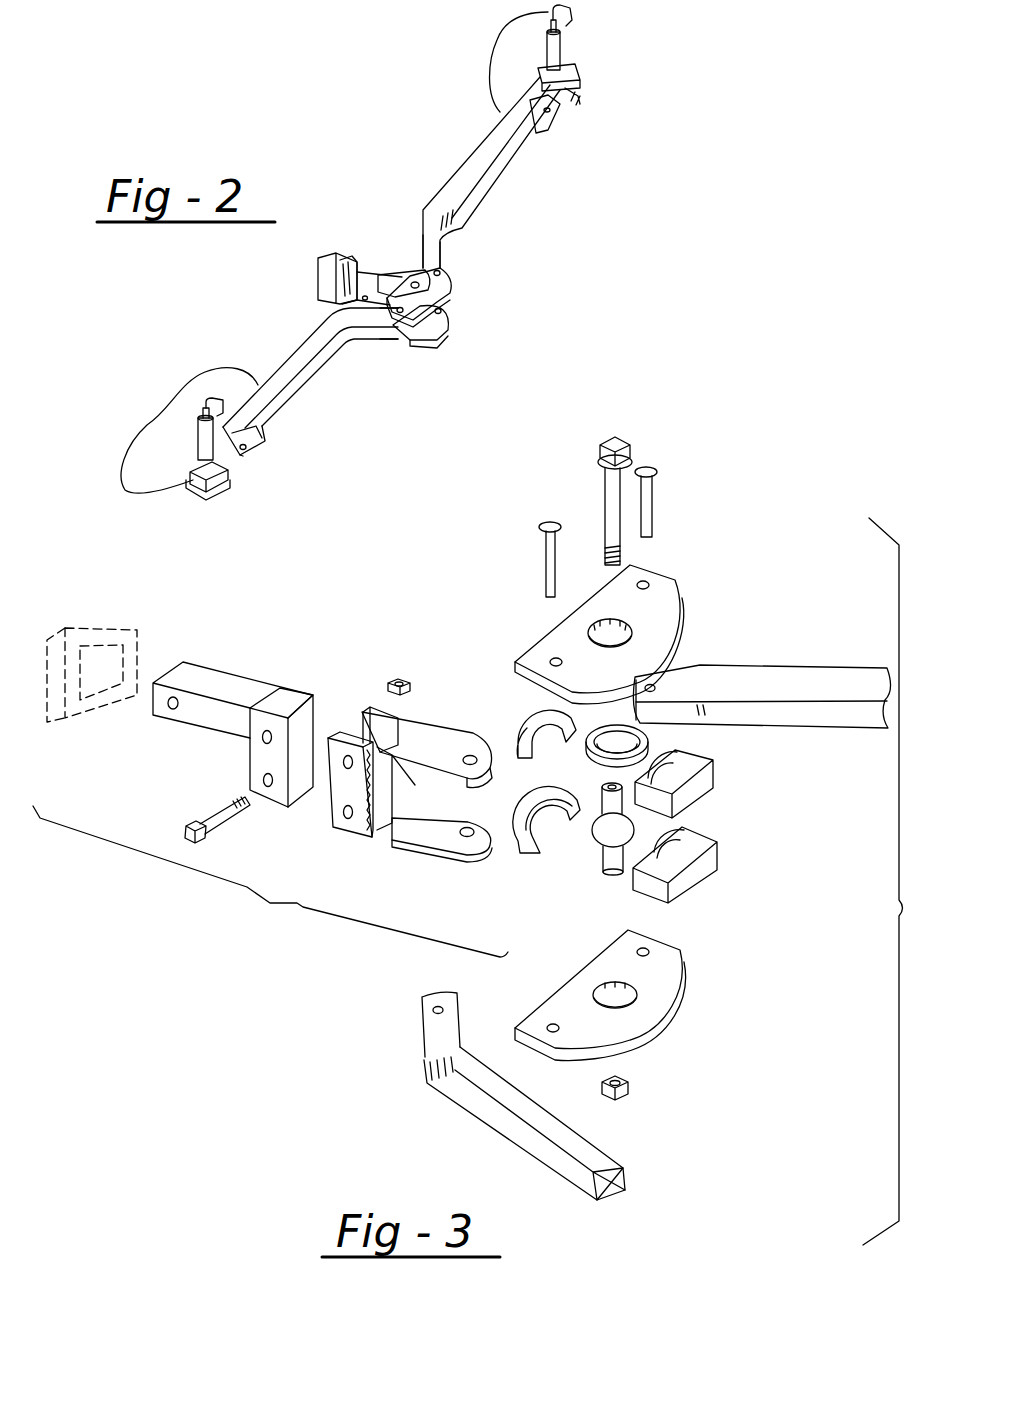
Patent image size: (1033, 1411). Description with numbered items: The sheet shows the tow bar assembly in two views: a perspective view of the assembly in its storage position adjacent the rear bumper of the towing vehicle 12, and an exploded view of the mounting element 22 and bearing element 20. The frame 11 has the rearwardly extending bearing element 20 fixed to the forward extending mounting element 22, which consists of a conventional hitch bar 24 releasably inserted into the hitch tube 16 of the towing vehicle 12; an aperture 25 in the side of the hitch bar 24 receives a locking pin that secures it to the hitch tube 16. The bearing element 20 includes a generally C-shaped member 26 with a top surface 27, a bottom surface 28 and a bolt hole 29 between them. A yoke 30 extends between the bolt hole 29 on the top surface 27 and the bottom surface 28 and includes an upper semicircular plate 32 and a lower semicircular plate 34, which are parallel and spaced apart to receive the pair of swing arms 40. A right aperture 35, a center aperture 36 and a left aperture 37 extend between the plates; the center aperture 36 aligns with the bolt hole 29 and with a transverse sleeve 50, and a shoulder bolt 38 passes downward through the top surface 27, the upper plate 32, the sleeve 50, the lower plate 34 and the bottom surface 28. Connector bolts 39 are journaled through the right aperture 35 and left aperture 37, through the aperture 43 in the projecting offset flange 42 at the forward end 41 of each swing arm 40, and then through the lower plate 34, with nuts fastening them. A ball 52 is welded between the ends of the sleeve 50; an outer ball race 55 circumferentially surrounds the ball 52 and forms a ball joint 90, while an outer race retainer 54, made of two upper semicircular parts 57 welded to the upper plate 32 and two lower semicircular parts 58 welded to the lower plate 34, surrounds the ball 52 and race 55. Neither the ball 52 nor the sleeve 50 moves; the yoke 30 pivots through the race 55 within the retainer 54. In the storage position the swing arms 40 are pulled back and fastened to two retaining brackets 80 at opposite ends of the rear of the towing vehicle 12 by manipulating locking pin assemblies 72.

In FIG. 2, the frame 11 is at (384, 277).
In FIG. 2, the towing vehicle 12 is at (158, 450).
In FIG. 2, the hitch tube 16 is at (340, 258).
In FIG. 3, the hitch tube 16 is at (115, 710).
In FIG. 3, the bearing element 20 is at (416, 773).
In FIG. 3, the mounting element 22 is at (290, 698).
In FIG. 3, the hitch bar 24 is at (218, 665).
In FIG. 3, the aperture 25 is at (177, 707).
In FIG. 3, the C-shaped member 26 is at (400, 797).
In FIG. 3, the top surface 27 is at (437, 730).
In FIG. 3, the bottom surface 28 is at (430, 847).
In FIG. 3, the bolt hole 29 is at (487, 758).
In FIG. 2, the yoke 30 is at (443, 290).
In FIG. 3, the yoke 30 is at (616, 808).
In FIG. 3, the upper semicircular plate 32 is at (618, 610).
In FIG. 3, the lower semicircular plate 34 is at (685, 972).
In FIG. 3, the right aperture 35 is at (556, 660).
In FIG. 3, the center aperture 36 is at (590, 637).
In FIG. 3, the left aperture 37 is at (647, 587).
In FIG. 3, the shoulder bolt 38 is at (603, 510).
In FIG. 3, the connector bolts 39 is at (655, 500).
In FIG. 2, the swing arms 40 is at (507, 157).
In FIG. 3, the swing arms 40 is at (615, 932).
In FIG. 3, the forward end 41 is at (787, 667).
In FIG. 2, the projecting offset flange 42 is at (440, 257).
In FIG. 3, the projecting offset flange 42 is at (677, 668).
In FIG. 3, the aperture 43 is at (658, 690).
In FIG. 3, the sleeve 50 is at (585, 830).
In FIG. 3, the ball 52 is at (597, 806).
In FIG. 3, the outer race retainer 54 is at (639, 800).
In FIG. 3, the outer ball race 55 is at (653, 747).
In FIG. 3, the upper semicircular parts 57 is at (717, 768).
In FIG. 3, the lower semicircular parts 58 is at (697, 872).
In FIG. 2, the locking pin assemblies 72 is at (570, 9).
In FIG. 2, the retaining brackets 80 is at (582, 90).
In FIG. 3, the ball joint 90 is at (556, 848).